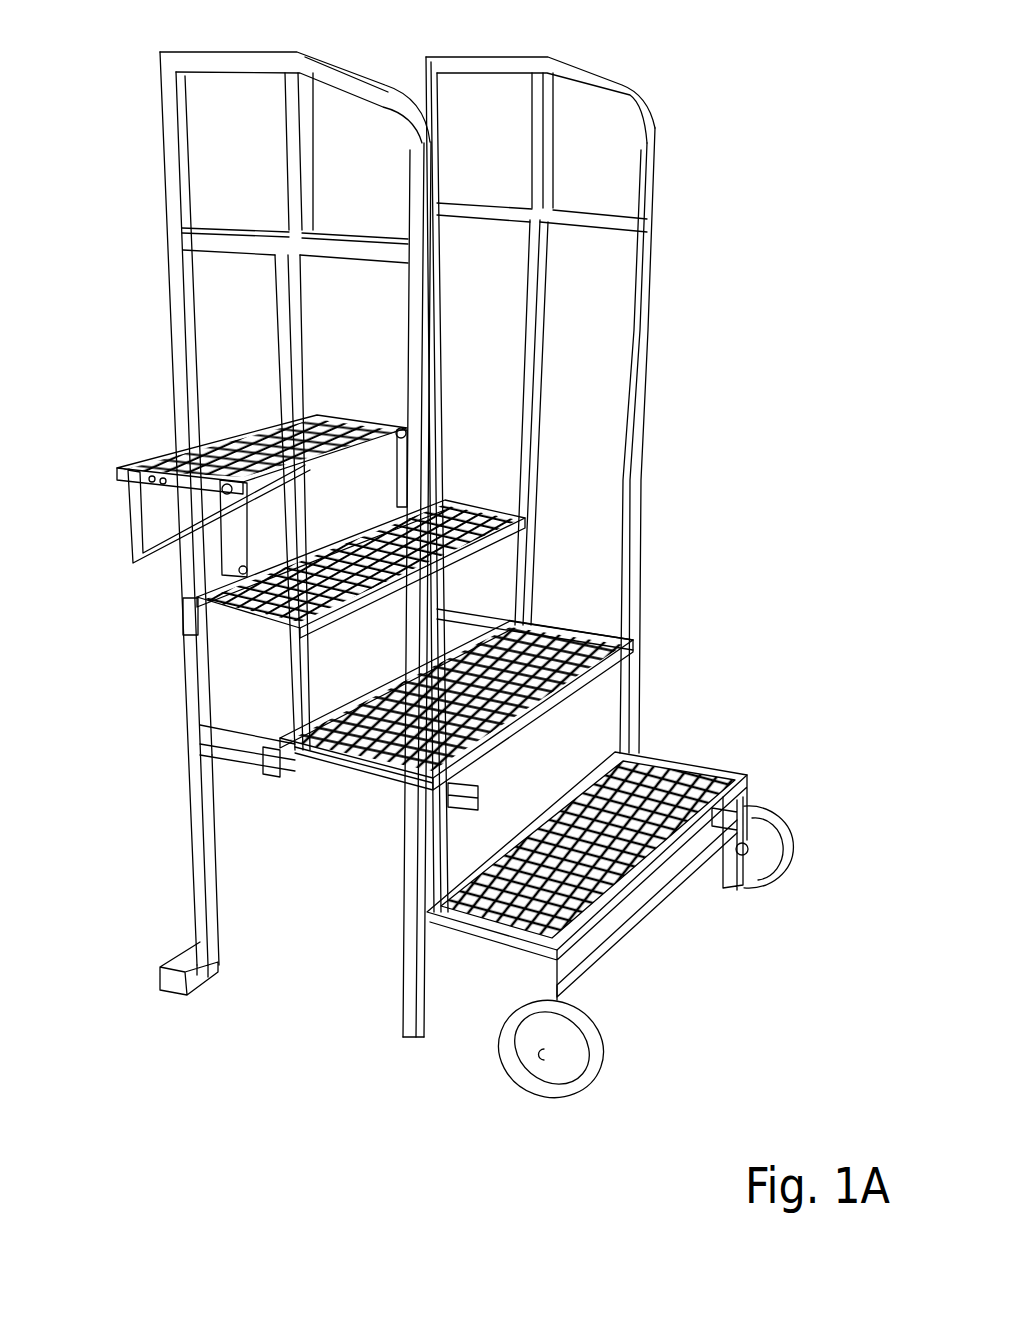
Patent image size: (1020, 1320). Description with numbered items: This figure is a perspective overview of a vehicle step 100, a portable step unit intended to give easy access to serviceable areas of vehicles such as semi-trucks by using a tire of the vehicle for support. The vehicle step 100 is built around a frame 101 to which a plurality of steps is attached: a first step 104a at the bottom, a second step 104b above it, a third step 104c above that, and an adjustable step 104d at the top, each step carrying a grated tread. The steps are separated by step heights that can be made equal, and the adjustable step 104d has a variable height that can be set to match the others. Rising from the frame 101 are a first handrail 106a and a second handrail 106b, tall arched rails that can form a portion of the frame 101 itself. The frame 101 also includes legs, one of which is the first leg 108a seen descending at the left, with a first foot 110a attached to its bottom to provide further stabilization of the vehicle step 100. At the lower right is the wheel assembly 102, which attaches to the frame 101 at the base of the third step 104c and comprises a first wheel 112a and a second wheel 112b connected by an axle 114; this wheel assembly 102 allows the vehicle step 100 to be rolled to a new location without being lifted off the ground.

The vehicle step 100 is at (715, 95).
The frame 101 is at (178, 778).
The wheel assembly 102 is at (606, 1072).
The first step 104a is at (670, 780).
The second step 104b is at (573, 653).
The third step 104c is at (200, 593).
The adjustable step 104d is at (150, 462).
The first handrail 106a is at (165, 160).
The second handrail 106b is at (640, 292).
The first leg 108a is at (203, 842).
The first foot 110a is at (187, 995).
The first wheel 112a is at (533, 1080).
The second wheel 112b is at (776, 889).
The axle 114 is at (665, 933).